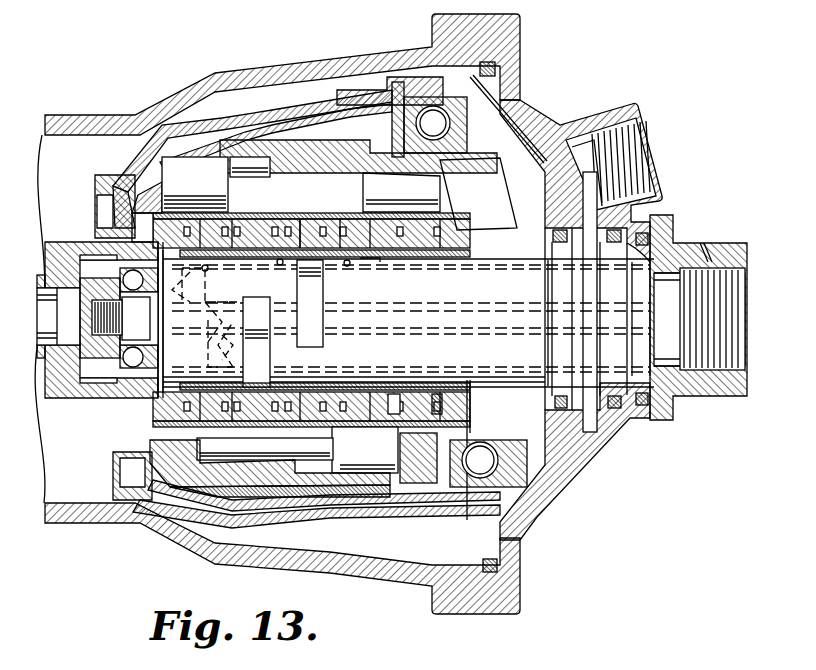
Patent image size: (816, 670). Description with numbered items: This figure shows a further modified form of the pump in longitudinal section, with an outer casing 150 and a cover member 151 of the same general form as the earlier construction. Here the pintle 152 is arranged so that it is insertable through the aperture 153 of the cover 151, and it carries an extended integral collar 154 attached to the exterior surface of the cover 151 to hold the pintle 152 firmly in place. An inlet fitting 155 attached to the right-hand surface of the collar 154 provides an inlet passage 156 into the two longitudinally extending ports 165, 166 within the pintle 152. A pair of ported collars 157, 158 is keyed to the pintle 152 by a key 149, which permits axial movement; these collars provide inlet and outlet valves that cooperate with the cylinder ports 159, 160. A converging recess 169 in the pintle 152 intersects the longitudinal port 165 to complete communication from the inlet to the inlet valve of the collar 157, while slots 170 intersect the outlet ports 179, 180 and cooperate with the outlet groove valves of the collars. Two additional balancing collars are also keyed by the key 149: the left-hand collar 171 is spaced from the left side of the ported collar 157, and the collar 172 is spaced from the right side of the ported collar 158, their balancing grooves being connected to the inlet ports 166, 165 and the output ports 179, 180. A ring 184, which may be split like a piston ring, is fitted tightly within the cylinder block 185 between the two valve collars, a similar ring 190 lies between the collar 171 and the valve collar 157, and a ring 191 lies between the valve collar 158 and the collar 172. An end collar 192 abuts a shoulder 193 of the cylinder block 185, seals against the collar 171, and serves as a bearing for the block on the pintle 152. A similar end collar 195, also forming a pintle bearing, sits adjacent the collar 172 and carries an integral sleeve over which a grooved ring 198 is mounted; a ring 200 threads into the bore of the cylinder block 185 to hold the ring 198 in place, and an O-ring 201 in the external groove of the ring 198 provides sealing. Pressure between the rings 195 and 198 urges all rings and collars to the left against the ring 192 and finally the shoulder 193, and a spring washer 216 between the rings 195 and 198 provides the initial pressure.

The key 149 is at (380, 260).
The outer casing 150 is at (344, 572).
The cover member 151 is at (556, 490).
The pintle 152 is at (495, 278).
The aperture 153 is at (560, 406).
The integral collar 154 is at (655, 215).
The inlet fitting 155 is at (668, 238).
The inlet passage 156 is at (706, 258).
The collar 157 is at (300, 240).
The collar 158 is at (340, 240).
The cylinder port 159 is at (205, 268).
The cylinder port 160 is at (320, 392).
The longitudinally extending port 165 is at (452, 320).
The longitudinally extending port 166 is at (212, 346).
The converging recess 169 is at (335, 297).
The slot 170 is at (262, 305).
The left-hand collar 171 is at (212, 232).
The collar 172 is at (380, 195).
The outlet port 179 is at (204, 320).
The outlet port 180 is at (520, 335).
The ring or collar 184 is at (277, 435).
The cylinder block 185 is at (297, 163).
The ring 190 is at (240, 230).
The ring or collar 191 is at (347, 264).
The end collar 192 is at (152, 205).
The shoulder 193 is at (158, 406).
The end collar 195 is at (392, 396).
The grooved ring 198 is at (438, 396).
The ring 200 is at (478, 400).
The O-ring 201 is at (458, 218).
The spring washer 216 is at (398, 415).